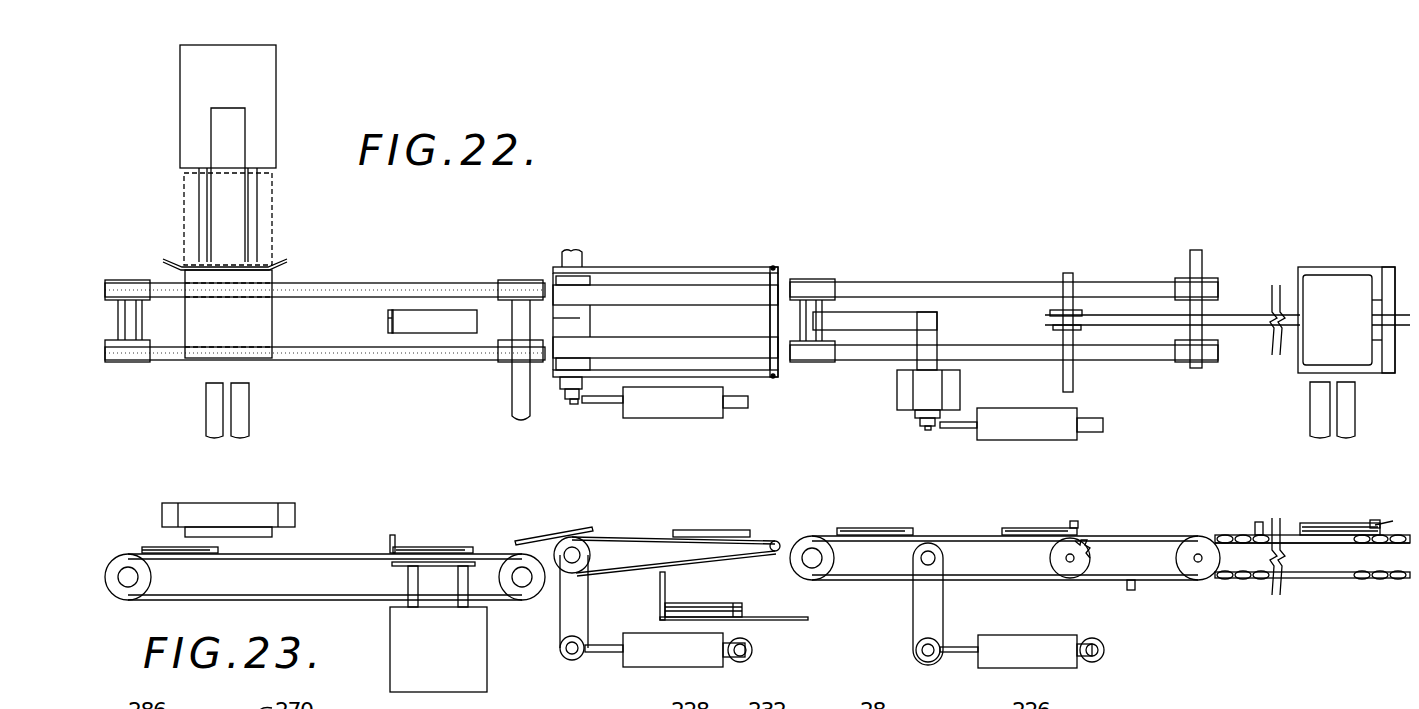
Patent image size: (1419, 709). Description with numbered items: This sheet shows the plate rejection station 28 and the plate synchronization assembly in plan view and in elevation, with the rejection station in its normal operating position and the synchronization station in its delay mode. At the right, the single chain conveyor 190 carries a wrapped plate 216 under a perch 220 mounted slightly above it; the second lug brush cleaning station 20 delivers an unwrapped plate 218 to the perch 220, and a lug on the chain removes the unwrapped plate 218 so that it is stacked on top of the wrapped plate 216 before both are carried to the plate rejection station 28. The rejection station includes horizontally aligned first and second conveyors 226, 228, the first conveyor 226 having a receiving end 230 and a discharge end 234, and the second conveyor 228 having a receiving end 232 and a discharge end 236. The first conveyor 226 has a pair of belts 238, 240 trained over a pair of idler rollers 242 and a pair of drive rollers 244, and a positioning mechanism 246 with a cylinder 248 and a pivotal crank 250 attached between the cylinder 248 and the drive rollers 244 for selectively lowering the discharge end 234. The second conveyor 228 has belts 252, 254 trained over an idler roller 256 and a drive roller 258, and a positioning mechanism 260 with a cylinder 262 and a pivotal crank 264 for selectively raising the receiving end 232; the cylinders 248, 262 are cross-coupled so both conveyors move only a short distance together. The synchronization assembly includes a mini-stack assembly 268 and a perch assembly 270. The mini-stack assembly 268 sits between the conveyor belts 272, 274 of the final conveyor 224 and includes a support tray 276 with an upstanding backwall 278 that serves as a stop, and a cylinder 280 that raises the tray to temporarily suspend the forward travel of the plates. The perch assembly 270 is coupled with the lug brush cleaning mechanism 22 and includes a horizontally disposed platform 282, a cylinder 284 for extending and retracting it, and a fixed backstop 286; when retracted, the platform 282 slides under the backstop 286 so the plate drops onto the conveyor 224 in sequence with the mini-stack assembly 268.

In FIG. 22, the second lug brush cleaning station 20 is at (1360, 408).
In FIG. 22, the lug brush cleaning mechanism 22 is at (258, 407).
In FIG. 22, the plate rejection station 28 is at (902, 185).
In FIG. 23, the plate rejection station 28 is at (888, 495).
In FIG. 22, the single chain conveyor 190 is at (1240, 323).
In FIG. 23, the single chain conveyor 190 is at (1385, 578).
In FIG. 23, the wrapped plate 216 is at (1312, 564).
In FIG. 22, the unwrapped plate 218 is at (1323, 288).
In FIG. 23, the unwrapped plate 218 is at (1320, 520).
In FIG. 22, the perch 220 is at (1377, 270).
In FIG. 23, the perch 220 is at (1383, 518).
In FIG. 22, the final conveyor 224 is at (368, 281).
In FIG. 23, the final conveyor 224 is at (338, 520).
In FIG. 22, the first conveyor 226 is at (1030, 278).
In FIG. 23, the first conveyor 226 is at (978, 530).
In FIG. 22, the second conveyor 228 is at (665, 240).
In FIG. 23, the second conveyor 228 is at (640, 522).
In FIG. 22, the receiving end 230 is at (1236, 282).
In FIG. 23, the receiving end 230 is at (1214, 528).
In FIG. 22, the receiving end 232 is at (770, 262).
In FIG. 23, the receiving end 232 is at (771, 531).
In FIG. 22, the discharge end 234 is at (806, 270).
In FIG. 23, the discharge end 234 is at (807, 530).
In FIG. 22, the discharge end 236 is at (548, 268).
In FIG. 23, the discharge end 236 is at (548, 528).
In FIG. 22, the belt 238 is at (940, 288).
In FIG. 22, the belt 240 is at (958, 350).
In FIG. 23, the belt 240 is at (1115, 537).
In FIG. 22, the idler rollers 242 is at (1187, 277).
In FIG. 23, the idler rollers 242 is at (1198, 570).
In FIG. 22, the drive rollers 244 is at (820, 277).
In FIG. 23, the drive rollers 244 is at (812, 576).
In FIG. 22, the positioning mechanism 246 is at (1088, 442).
In FIG. 23, the positioning mechanism 246 is at (1106, 660).
In FIG. 22, the cylinder 248 is at (1015, 415).
In FIG. 23, the cylinder 248 is at (1037, 640).
In FIG. 22, the pivotal crank 250 is at (922, 387).
In FIG. 23, the pivotal crank 250 is at (932, 612).
In FIG. 22, the belt 252 is at (610, 292).
In FIG. 22, the belt 254 is at (678, 342).
In FIG. 23, the belt 254 is at (637, 568).
In FIG. 22, the idler roller 256 is at (778, 280).
In FIG. 23, the idler roller 256 is at (777, 550).
In FIG. 22, the drive roller 258 is at (580, 318).
In FIG. 23, the drive roller 258 is at (590, 555).
In FIG. 22, the positioning mechanism 260 is at (683, 424).
In FIG. 23, the positioning mechanism 260 is at (760, 644).
In FIG. 22, the cylinder 262 is at (710, 415).
In FIG. 23, the cylinder 262 is at (637, 660).
In FIG. 22, the pivotal crank 264 is at (562, 393).
In FIG. 23, the pivotal crank 264 is at (560, 610).
In FIG. 22, the mini-stack assembly 268 is at (397, 348).
In FIG. 23, the mini-stack assembly 268 is at (378, 614).
In FIG. 22, the perch assembly 270 is at (292, 192).
In FIG. 23, the perch assembly 270 is at (148, 500).
In FIG. 22, the conveyor belt 272 is at (457, 283).
In FIG. 22, the conveyor belt 274 is at (423, 360).
In FIG. 22, the support tray 276 is at (445, 330).
In FIG. 23, the support tray 276 is at (403, 563).
In FIG. 22, the upstanding backwall 278 is at (390, 320).
In FIG. 23, the upstanding backwall 278 is at (393, 537).
In FIG. 23, the cylinder 280 is at (472, 672).
In FIG. 22, the platform 282 is at (195, 327).
In FIG. 23, the platform 282 is at (207, 532).
In FIG. 22, the cylinder 284 is at (267, 84).
In FIG. 22, the fixed backstop 286 is at (300, 260).
In FIG. 23, the fixed backstop 286 is at (242, 507).